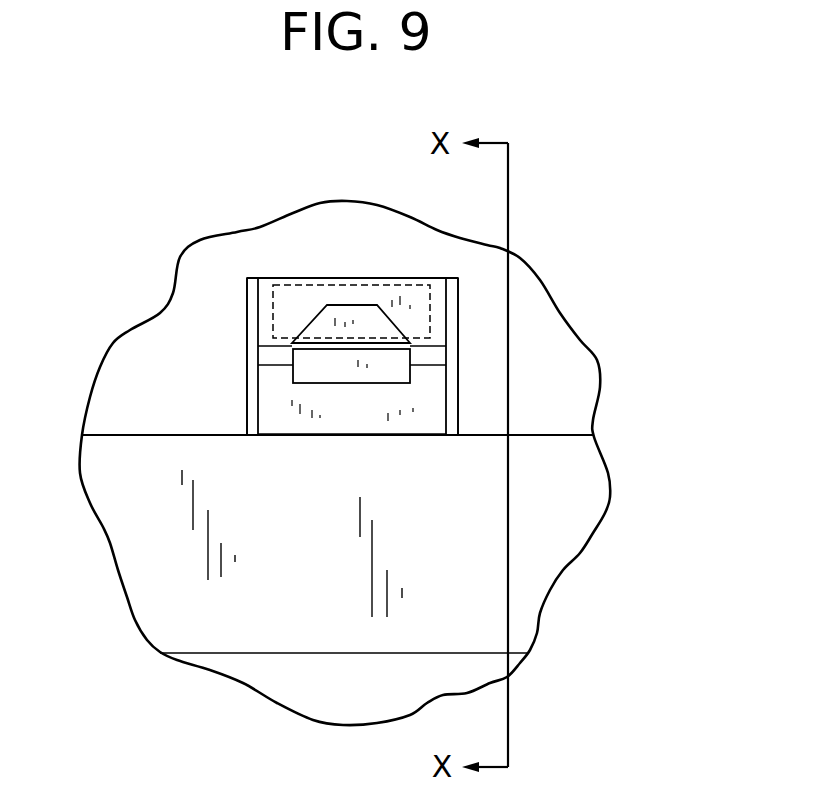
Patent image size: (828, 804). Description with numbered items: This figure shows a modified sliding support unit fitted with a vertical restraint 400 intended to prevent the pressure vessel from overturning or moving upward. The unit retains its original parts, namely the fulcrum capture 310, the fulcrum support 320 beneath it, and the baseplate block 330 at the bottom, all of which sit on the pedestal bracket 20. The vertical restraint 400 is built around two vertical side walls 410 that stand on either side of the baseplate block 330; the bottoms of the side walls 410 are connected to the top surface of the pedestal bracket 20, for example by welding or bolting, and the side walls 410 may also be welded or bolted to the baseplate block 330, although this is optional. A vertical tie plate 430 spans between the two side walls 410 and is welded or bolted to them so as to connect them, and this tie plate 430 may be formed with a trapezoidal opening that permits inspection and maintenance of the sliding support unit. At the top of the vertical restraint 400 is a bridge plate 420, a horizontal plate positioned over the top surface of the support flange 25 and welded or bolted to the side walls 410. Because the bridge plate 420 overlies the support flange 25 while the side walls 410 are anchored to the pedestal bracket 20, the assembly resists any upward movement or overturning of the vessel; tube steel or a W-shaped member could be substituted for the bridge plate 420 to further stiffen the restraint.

The pedestal bracket 20 is at (590, 510).
The support flange 25 is at (287, 295).
The fulcrum capture 310 is at (410, 345).
The fulcrum support 320 is at (395, 367).
The baseplate block 330 is at (437, 422).
The vertical restraint 400 is at (405, 252).
The vertical side walls 410 is at (252, 381).
The bridge plate 420 is at (445, 277).
The vertical tie plate 430 is at (268, 322).